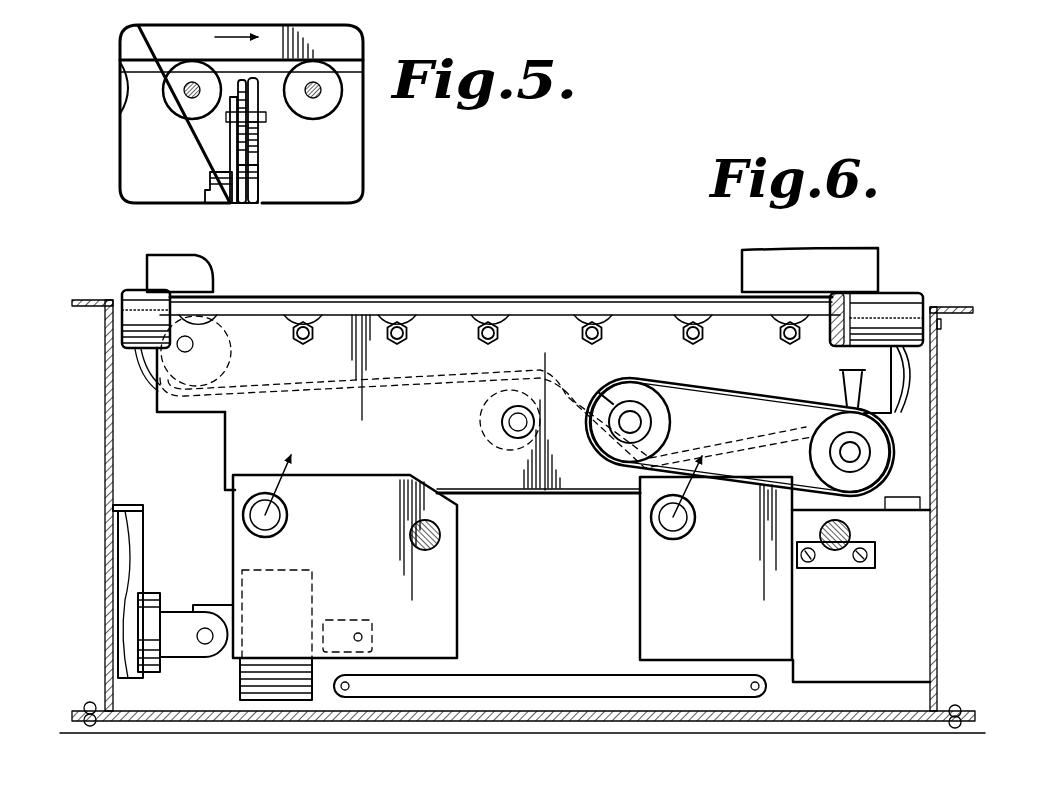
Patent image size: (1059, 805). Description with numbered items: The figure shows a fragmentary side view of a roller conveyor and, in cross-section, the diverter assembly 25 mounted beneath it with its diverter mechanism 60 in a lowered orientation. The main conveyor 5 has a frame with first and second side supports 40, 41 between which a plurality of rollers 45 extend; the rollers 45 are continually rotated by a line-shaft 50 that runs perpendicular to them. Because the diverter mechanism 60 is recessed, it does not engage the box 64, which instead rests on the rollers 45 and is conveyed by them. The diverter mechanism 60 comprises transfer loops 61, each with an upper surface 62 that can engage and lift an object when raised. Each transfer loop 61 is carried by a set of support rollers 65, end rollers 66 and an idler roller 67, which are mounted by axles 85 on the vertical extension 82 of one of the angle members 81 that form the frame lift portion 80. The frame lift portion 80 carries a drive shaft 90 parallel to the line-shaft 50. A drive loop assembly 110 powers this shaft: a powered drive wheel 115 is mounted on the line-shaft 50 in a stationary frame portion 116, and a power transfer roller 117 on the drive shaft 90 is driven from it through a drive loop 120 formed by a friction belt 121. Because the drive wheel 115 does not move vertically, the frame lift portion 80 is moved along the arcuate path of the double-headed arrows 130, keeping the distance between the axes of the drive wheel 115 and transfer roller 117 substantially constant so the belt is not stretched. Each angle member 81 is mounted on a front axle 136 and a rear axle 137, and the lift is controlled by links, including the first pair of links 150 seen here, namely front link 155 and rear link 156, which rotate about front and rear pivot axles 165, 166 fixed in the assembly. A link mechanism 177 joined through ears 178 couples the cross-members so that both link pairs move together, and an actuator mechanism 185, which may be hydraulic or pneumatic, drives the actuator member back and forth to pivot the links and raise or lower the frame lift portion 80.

In FIG. 6, the main conveyor 5 is at (890, 296).
In FIG. 6, the diverter assembly 25 is at (187, 421).
In FIG. 6, the first side support 40 is at (967, 314).
In FIG. 6, the second side support 41 is at (85, 300).
In FIG. 5, the rollers 45 is at (180, 68).
In FIG. 6, the rollers 45 is at (130, 290).
In FIG. 6, the line-shaft 50 is at (850, 452).
In FIG. 6, the diverter mechanism 60 is at (258, 301).
In FIG. 5, the transfer loops 61 is at (252, 78).
In FIG. 6, the transfer loops 61 is at (350, 301).
In FIG. 6, the upper surface 62 is at (442, 301).
In FIG. 6, the box 64 is at (212, 268).
In FIG. 6, the support rollers 65 is at (491, 301).
In FIG. 6, the end rollers 66 is at (230, 342).
In FIG. 6, the idler roller 67 is at (485, 410).
In FIG. 6, the frame lift portion 80 is at (225, 462).
In FIG. 5, the angle members 81 is at (235, 97).
In FIG. 6, the angle members 81 is at (465, 491).
In FIG. 5, the vertical extension 82 is at (231, 141).
In FIG. 6, the vertical extension 82 is at (507, 491).
In FIG. 6, the axles 85 is at (187, 352).
In FIG. 6, the drive shaft 90 is at (630, 422).
In FIG. 6, the drive loop assembly 110 is at (675, 385).
In FIG. 6, the powered drive wheel 115 is at (891, 451).
In FIG. 6, the stationary frame portion 116 is at (893, 496).
In FIG. 6, the power transfer roller 117 is at (606, 401).
In FIG. 6, the drive loop 120 is at (711, 391).
In FIG. 6, the friction belt 121 is at (769, 402).
In FIG. 6, the double-headed arrows 130 is at (698, 490).
In FIG. 6, the front axle 136 is at (675, 539).
In FIG. 6, the rear axle 137 is at (278, 531).
In FIG. 6, the first pair of links 150 is at (457, 625).
In FIG. 6, the front link 155 is at (641, 576).
In FIG. 6, the rear link 156 is at (457, 580).
In FIG. 6, the front pivot axle 165 is at (851, 535).
In FIG. 6, the rear pivot axle 166 is at (410, 539).
In FIG. 6, the link mechanism 177 is at (516, 691).
In FIG. 6, the ears 178 is at (372, 620).
In FIG. 6, the actuator mechanism 185 is at (160, 606).